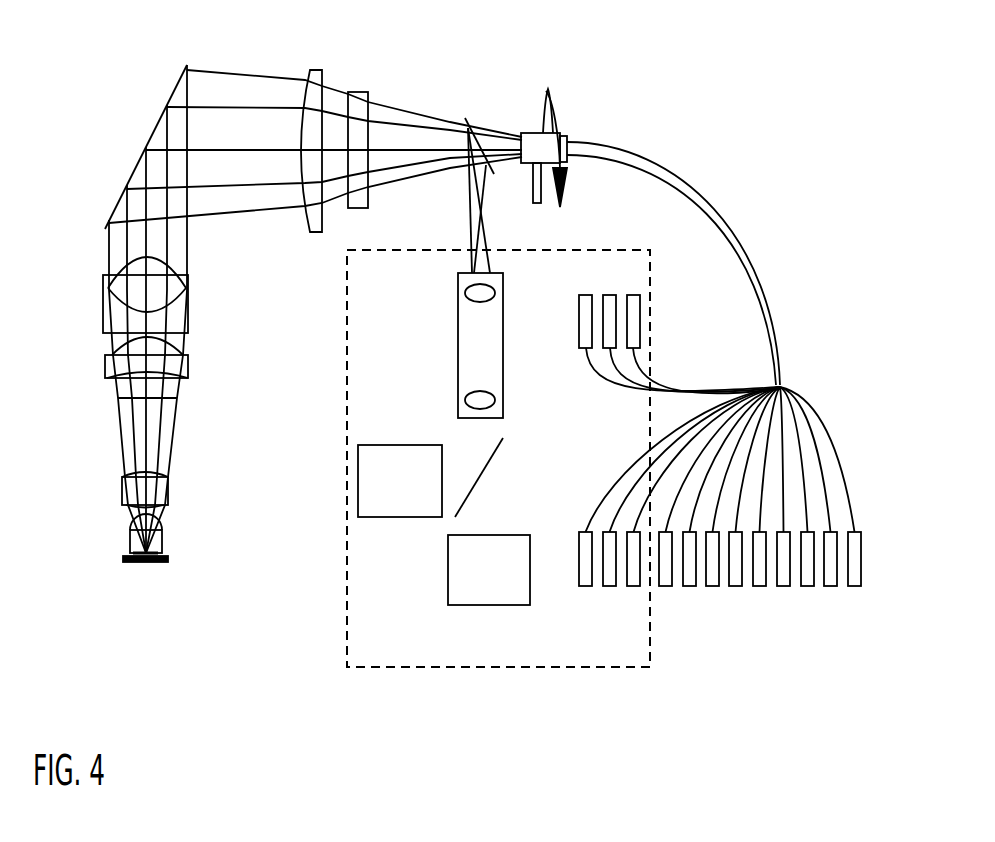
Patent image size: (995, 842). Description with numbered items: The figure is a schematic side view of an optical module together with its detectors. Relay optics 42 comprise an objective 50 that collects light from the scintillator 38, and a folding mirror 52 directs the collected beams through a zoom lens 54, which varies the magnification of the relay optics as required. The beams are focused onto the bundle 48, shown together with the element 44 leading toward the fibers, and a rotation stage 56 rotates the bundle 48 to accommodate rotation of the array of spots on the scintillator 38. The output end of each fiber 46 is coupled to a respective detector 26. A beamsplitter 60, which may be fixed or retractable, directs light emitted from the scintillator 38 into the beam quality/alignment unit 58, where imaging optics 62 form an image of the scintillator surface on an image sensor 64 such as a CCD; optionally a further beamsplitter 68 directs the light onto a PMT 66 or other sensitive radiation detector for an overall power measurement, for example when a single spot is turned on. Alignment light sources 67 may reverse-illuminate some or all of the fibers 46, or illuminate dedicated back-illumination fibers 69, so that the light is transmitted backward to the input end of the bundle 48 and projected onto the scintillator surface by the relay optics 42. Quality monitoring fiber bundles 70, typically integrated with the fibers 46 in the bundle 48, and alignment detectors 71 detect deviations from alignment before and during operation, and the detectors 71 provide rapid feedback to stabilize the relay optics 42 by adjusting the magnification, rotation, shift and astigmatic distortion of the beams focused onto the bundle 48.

The detector 26 is at (665, 587).
The scintillator 38 is at (143, 564).
The relay optics 42 is at (106, 118).
The fiber optic bundle 44 is at (757, 140).
The fiber 46 is at (822, 452).
The bundle 48 is at (526, 132).
The objective 50 is at (97, 237).
The folding mirror 52 is at (175, 87).
The zoom lens 54 is at (382, 58).
The rotation stage 56 is at (560, 100).
The beam quality/alignment unit 58 is at (347, 302).
The beamsplitter 60 is at (466, 117).
The imaging optics 62 is at (503, 350).
The image sensor 64 is at (408, 445).
The PMT 66 is at (448, 578).
The alignment light sources 67 is at (633, 295).
The beamsplitter 68 is at (492, 465).
The back-illumination fibers 69 is at (707, 398).
The quality monitoring fiber bundles 70 is at (684, 480).
The alignment detectors 71 is at (633, 587).